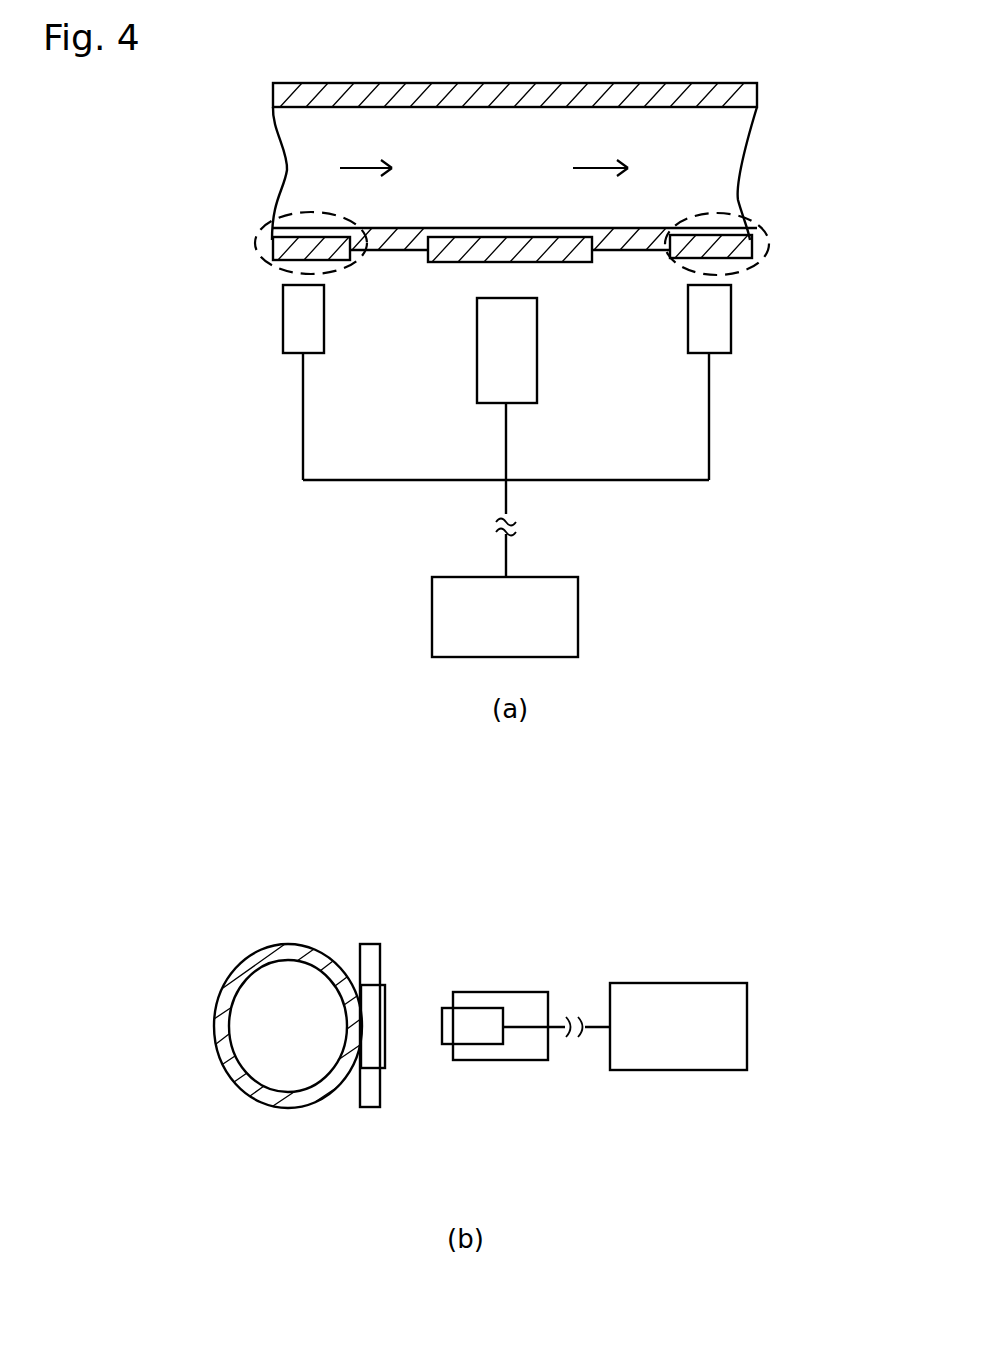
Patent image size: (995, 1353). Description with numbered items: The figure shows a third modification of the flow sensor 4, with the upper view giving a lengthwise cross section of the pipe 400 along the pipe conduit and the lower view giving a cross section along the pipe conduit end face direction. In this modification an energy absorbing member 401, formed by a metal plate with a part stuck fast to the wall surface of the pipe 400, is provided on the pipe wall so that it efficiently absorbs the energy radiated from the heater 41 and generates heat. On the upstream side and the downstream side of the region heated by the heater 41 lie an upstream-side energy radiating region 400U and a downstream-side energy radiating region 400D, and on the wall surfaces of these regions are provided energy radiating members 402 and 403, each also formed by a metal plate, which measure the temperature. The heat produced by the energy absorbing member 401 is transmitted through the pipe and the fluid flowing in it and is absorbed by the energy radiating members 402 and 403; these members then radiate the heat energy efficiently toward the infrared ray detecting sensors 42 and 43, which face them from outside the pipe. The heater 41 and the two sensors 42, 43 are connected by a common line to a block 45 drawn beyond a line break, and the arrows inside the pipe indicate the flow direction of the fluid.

The flow sensor 4 is at (650, 577).
The pipe 400 is at (672, 83).
The upstream-side energy radiating region 400U is at (263, 258).
The downstream-side energy radiating region 400D is at (755, 268).
The energy absorbing member 401 is at (452, 262).
The energy radiating member 402 is at (300, 213).
The energy radiating member 403 is at (704, 237).
The heater 41 is at (537, 360).
The infrared ray detecting sensor 42 is at (283, 331).
The infrared ray detecting sensor 43 is at (731, 330).
The controller 45 is at (578, 637).